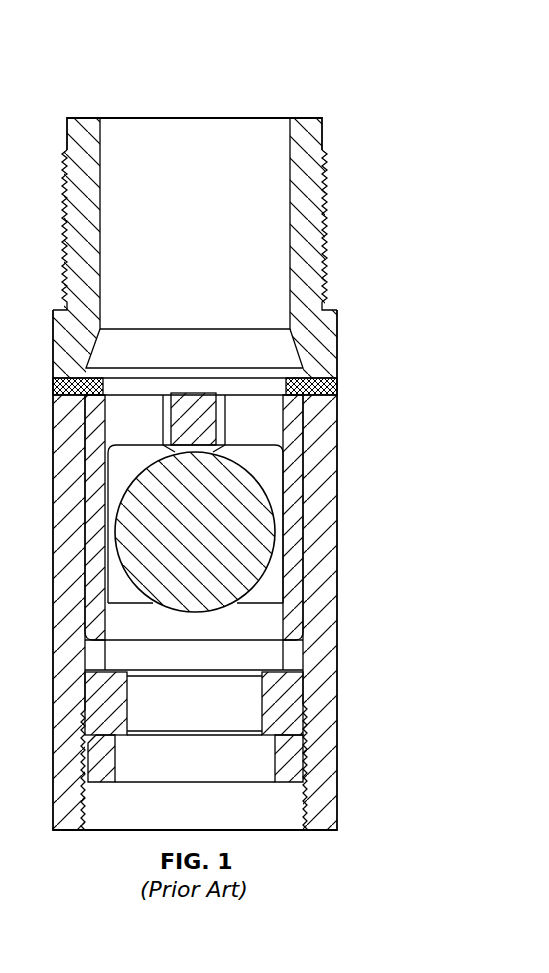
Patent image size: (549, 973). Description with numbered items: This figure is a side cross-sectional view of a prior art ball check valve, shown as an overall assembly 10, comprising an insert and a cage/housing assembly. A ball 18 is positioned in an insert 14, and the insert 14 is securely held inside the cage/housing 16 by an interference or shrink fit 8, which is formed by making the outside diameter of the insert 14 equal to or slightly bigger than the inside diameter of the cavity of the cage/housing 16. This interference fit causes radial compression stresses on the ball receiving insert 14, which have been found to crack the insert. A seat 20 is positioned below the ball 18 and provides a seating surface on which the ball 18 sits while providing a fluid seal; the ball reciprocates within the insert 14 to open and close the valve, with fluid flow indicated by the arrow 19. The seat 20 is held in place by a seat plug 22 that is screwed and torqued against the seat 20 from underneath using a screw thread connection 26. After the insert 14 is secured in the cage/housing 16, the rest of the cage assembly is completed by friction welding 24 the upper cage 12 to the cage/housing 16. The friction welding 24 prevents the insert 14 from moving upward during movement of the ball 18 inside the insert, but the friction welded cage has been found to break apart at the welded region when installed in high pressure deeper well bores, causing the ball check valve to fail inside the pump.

The check valve assembly 10 is at (315, 68).
The cage 12 is at (310, 153).
The friction welding 24 is at (300, 381).
The insert 14 is at (310, 435).
The cage/housing 16 is at (320, 492).
The shrink fit 8 is at (300, 507).
The ball 18 is at (268, 548).
The flow direction 19 is at (187, 627).
The seat 20 is at (288, 707).
The seat plug 22 is at (286, 772).
The screw thread connection 26 is at (308, 768).